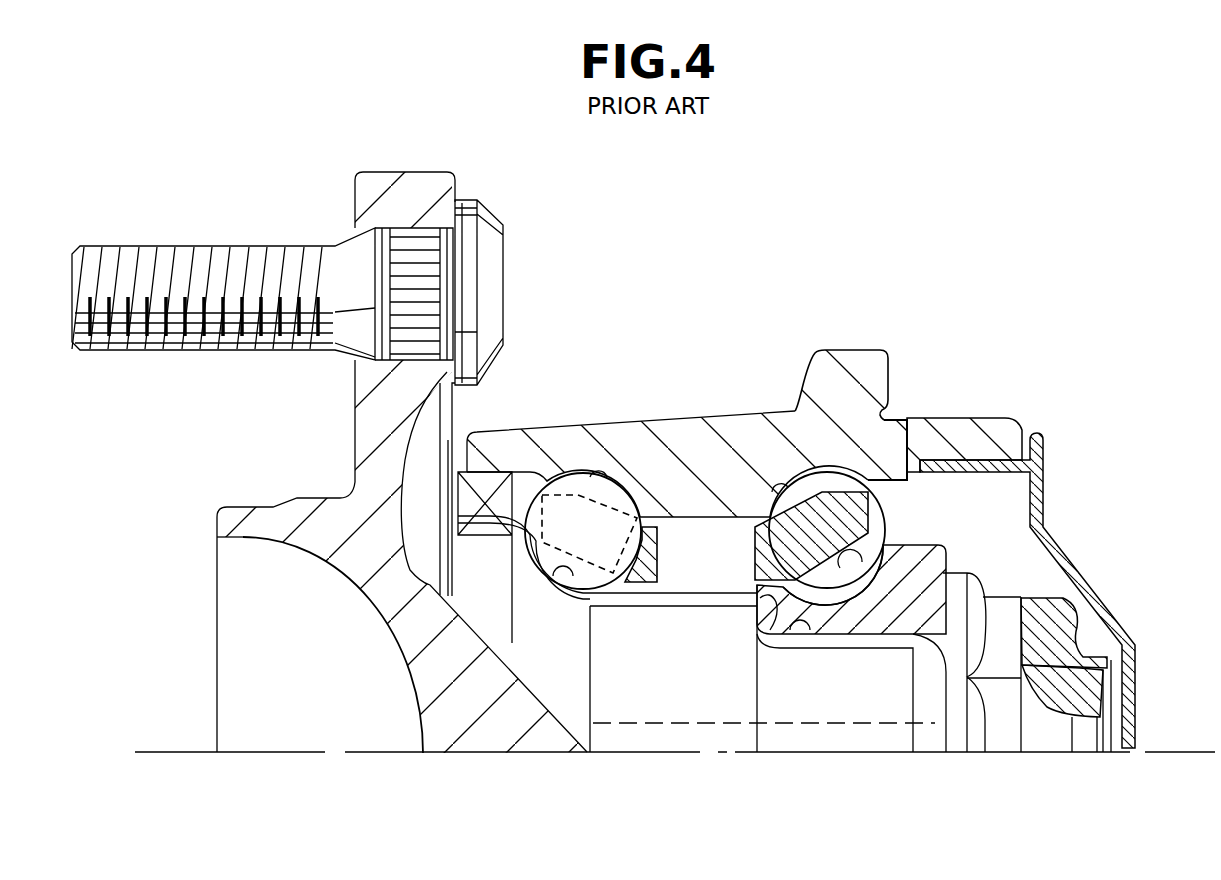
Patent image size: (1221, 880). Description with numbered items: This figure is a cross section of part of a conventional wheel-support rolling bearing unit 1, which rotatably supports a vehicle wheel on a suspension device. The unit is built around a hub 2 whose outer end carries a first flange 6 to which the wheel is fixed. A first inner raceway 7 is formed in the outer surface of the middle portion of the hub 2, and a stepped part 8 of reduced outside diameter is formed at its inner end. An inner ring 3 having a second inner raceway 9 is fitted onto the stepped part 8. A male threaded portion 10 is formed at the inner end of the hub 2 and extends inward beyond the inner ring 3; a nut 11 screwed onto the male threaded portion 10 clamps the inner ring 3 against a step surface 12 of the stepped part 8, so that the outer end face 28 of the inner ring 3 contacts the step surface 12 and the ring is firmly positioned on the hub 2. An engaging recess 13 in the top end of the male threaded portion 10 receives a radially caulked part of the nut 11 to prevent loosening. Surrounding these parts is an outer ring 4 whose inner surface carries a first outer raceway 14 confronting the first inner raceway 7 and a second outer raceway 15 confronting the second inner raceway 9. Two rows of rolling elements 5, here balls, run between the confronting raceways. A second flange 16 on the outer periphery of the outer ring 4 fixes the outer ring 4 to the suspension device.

The wheel-support rolling bearing unit 1 is at (689, 262).
The hub 2 is at (315, 500).
The inner ring 3 is at (899, 428).
The outer ring 4 is at (686, 445).
The rolling elements 5 is at (572, 480).
The first flange 6 is at (462, 196).
The first inner raceway 7 is at (567, 592).
The stepped part 8 is at (805, 630).
The second inner raceway 9 is at (857, 566).
The male threaded portion 10 is at (1040, 658).
The nut 11 is at (1018, 718).
The step surface 12 is at (760, 605).
The engaging recess 13 is at (1115, 672).
The first outer raceway 14 is at (590, 473).
The second outer raceway 15 is at (780, 486).
The second flange 16 is at (852, 368).
The outer end face 28 is at (755, 592).